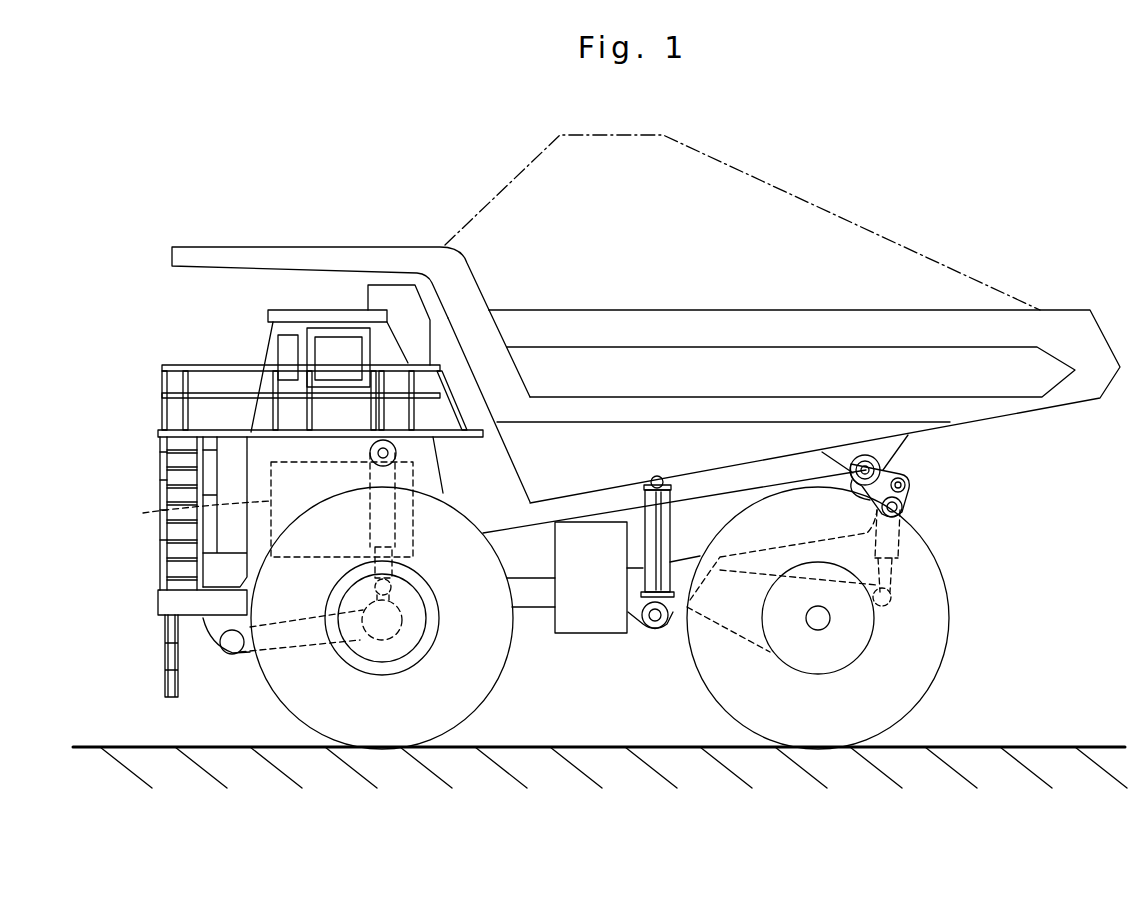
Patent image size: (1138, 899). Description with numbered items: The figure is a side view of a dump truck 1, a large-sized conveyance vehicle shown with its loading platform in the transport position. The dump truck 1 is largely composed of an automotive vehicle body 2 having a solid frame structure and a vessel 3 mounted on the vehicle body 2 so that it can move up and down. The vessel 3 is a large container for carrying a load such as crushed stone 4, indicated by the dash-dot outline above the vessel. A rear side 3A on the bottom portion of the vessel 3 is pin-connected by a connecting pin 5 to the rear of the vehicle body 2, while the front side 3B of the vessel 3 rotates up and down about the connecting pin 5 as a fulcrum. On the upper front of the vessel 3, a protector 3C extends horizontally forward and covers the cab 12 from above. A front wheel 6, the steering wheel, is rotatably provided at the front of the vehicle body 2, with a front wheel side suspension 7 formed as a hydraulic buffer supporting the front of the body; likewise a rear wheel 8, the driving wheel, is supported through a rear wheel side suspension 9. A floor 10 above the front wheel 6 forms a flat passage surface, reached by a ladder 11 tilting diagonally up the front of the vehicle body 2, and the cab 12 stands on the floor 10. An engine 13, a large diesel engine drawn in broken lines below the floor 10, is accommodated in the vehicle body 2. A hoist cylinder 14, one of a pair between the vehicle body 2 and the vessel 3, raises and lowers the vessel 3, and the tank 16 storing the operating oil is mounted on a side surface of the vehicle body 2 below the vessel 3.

The dump truck 1 is at (340, 150).
The vehicle body 2 is at (538, 562).
The vessel 3 is at (804, 300).
The rear side 3A is at (958, 367).
The front side 3B is at (455, 273).
The protector 3C is at (245, 258).
The crushed stone 4 is at (822, 245).
The connecting pin 5 is at (883, 467).
The front wheel 6 is at (390, 705).
The front wheel side suspension 7 is at (380, 478).
The rear wheel 8 is at (825, 705).
The rear wheel side suspension 9 is at (887, 543).
The floor 10 is at (233, 430).
The ladder 11 is at (183, 540).
The cab 12 is at (290, 352).
The engine 13 is at (150, 513).
The hoist cylinder 14 is at (653, 570).
The tank 16 is at (592, 588).